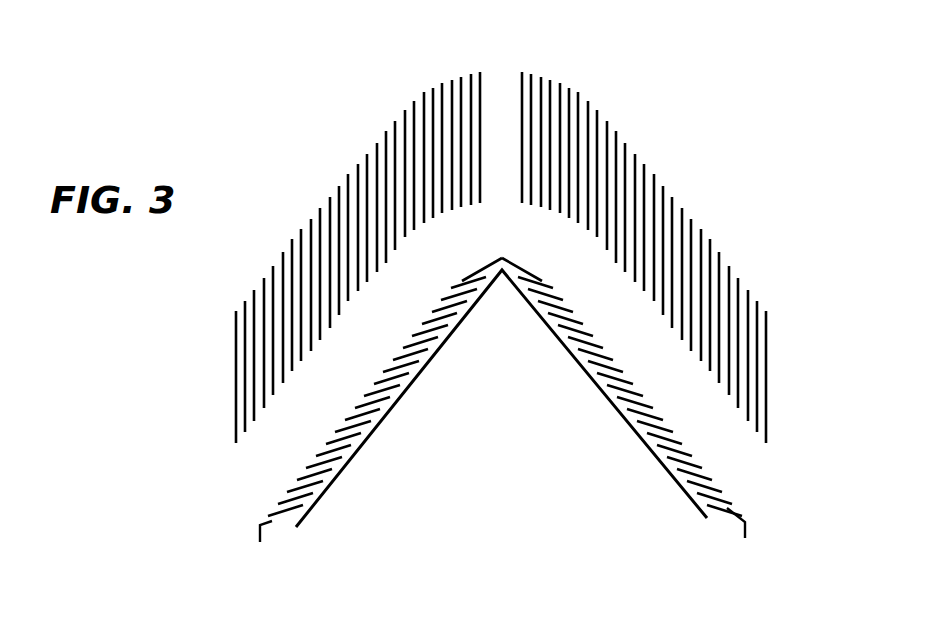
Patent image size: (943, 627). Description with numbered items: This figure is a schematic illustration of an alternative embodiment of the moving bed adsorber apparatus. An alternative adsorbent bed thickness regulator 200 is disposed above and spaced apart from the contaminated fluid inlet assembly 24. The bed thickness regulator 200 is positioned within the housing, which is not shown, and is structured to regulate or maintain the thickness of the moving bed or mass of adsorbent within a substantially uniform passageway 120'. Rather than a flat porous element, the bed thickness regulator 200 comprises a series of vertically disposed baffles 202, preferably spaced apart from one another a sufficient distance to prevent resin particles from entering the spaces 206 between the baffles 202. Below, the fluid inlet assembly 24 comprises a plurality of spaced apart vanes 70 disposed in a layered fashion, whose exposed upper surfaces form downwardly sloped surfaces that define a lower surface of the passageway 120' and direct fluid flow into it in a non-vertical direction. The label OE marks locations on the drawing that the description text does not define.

The adsorbent bed thickness regulator 200 is at (682, 212).
The vertically disposed baffles 202 is at (398, 140).
The spaces between the baffles 206 is at (336, 220).
The fluid inlet assembly 24 is at (720, 473).
The vanes 70 is at (302, 478).
The outer edge OE is at (387, 364).
The passageway 120' is at (234, 398).